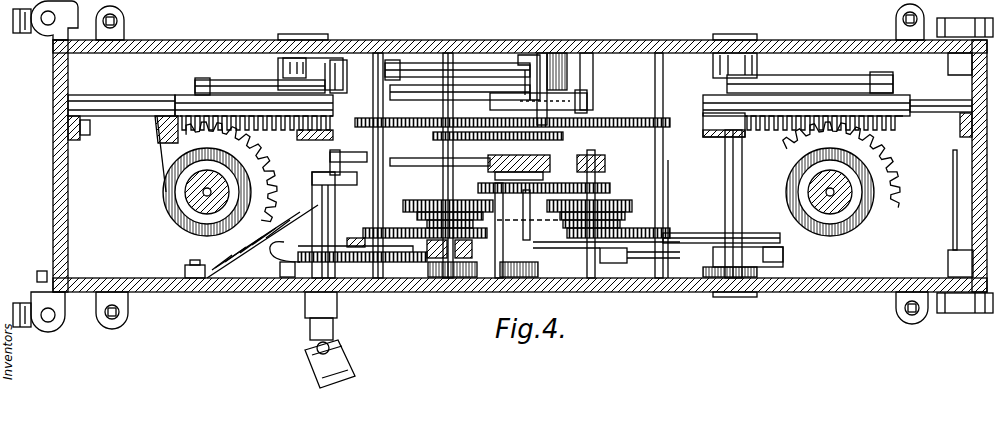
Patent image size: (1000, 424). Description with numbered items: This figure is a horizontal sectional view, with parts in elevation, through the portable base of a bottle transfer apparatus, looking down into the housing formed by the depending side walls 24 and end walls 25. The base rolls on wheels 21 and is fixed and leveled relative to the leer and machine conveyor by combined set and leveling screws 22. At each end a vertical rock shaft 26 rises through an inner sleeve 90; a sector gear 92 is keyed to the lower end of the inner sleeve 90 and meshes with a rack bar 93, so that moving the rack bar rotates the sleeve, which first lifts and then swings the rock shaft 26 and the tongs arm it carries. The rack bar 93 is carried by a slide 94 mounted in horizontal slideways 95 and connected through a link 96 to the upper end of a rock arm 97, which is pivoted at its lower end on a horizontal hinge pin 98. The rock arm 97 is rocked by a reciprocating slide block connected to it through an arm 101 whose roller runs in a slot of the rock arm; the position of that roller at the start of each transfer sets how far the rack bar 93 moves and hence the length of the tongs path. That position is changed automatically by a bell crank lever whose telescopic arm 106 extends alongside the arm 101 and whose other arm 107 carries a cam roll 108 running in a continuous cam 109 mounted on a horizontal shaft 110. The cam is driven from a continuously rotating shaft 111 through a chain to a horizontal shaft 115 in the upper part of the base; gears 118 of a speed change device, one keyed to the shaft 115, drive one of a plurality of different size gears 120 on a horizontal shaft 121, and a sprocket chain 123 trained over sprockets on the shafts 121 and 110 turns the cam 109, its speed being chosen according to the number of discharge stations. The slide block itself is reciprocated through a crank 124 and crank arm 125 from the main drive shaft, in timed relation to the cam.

The wheels 21 is at (28, 332).
The combined set and leveling screws 22 is at (128, 310).
The side walls 24 is at (808, 40).
The end walls 25 is at (55, 182).
The vertical rock shaft 26 is at (205, 192).
The inner sleeve 90 is at (185, 215).
The sector gear 92 is at (263, 160).
The rack bar 93 is at (188, 119).
The slide 94 is at (192, 103).
The horizontal slideways 95 is at (108, 101).
The link 96 is at (225, 86).
The rock arm 97 is at (298, 58).
The horizontal hinge pin 98 is at (730, 185).
The arm 101 is at (715, 233).
The telescopic arm 106 is at (470, 67).
The arm of bell crank lever 107 is at (562, 78).
The cam roll 108 is at (586, 100).
The continuous cam 109 is at (612, 118).
The horizontal shaft 110 is at (530, 58).
The continuously rotating shaft 111 is at (337, 304).
The horizontal shaft 115 is at (378, 190).
The gears 118 is at (372, 231).
The different size gears 120 is at (470, 228).
The horizontal shaft 121 is at (455, 188).
The sprocket chain 123 is at (432, 136).
The crank 124 is at (365, 157).
The crank arm 125 is at (312, 208).